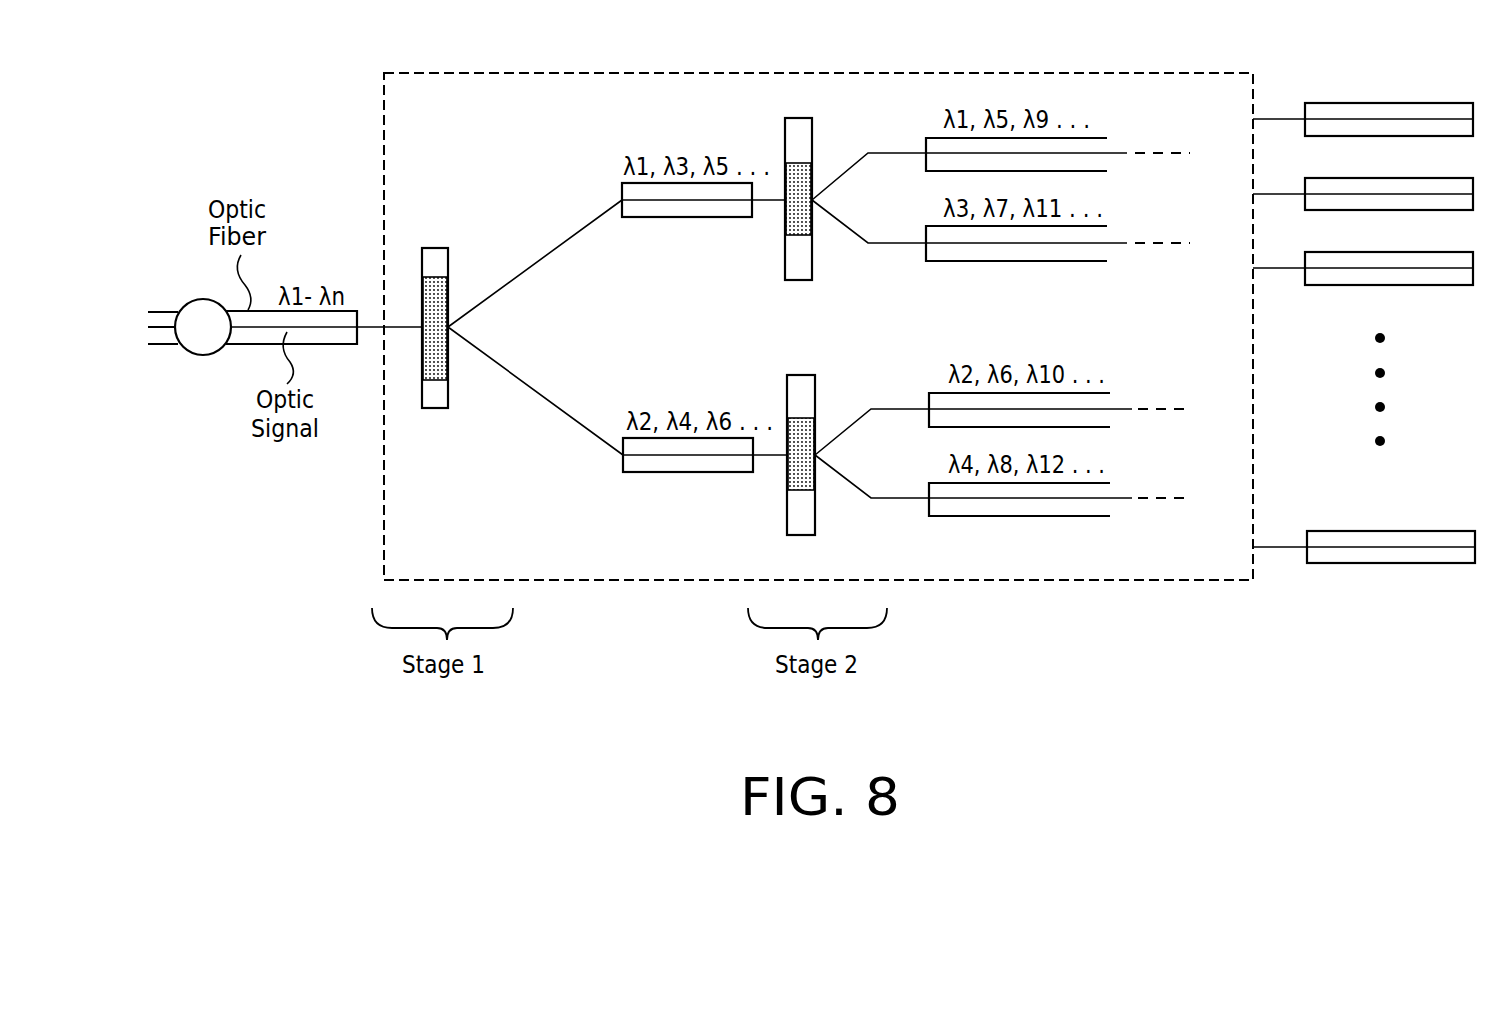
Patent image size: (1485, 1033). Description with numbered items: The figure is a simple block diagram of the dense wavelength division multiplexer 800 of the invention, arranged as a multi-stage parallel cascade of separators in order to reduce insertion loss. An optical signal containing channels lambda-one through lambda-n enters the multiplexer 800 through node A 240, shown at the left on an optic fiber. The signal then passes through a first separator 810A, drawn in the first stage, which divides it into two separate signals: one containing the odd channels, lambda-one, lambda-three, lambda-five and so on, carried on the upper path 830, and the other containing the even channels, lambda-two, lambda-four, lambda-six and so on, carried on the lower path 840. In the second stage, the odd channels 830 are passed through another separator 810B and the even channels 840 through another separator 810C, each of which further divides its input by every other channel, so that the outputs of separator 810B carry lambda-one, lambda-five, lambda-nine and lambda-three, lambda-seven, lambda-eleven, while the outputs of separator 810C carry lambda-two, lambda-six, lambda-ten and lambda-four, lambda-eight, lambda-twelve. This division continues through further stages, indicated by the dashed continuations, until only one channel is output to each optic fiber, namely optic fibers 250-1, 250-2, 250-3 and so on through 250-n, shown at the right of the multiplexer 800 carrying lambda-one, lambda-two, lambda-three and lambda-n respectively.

The dense wavelength division multiplexer 800 is at (1097, 73).
The node A 240 is at (197, 355).
The separator 810A is at (432, 248).
The separator 810B is at (785, 255).
The separator 810C is at (787, 508).
The odd channels signal 830 is at (637, 218).
The even channels signal 840 is at (640, 473).
The optic fiber 250-1 is at (1385, 102).
The optic fiber 250-2 is at (1385, 177).
The optic fiber 250-3 is at (1385, 251).
The optic fiber 250-n is at (1388, 530).